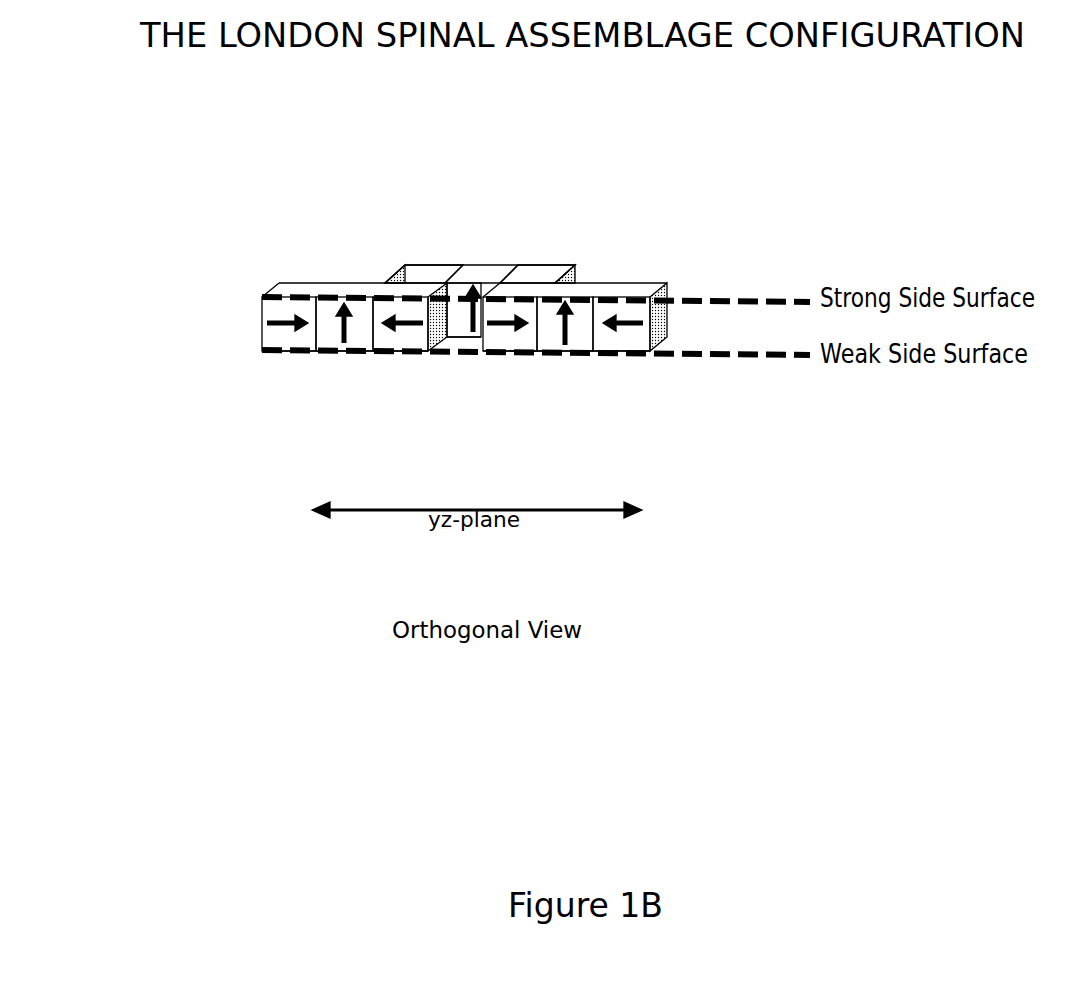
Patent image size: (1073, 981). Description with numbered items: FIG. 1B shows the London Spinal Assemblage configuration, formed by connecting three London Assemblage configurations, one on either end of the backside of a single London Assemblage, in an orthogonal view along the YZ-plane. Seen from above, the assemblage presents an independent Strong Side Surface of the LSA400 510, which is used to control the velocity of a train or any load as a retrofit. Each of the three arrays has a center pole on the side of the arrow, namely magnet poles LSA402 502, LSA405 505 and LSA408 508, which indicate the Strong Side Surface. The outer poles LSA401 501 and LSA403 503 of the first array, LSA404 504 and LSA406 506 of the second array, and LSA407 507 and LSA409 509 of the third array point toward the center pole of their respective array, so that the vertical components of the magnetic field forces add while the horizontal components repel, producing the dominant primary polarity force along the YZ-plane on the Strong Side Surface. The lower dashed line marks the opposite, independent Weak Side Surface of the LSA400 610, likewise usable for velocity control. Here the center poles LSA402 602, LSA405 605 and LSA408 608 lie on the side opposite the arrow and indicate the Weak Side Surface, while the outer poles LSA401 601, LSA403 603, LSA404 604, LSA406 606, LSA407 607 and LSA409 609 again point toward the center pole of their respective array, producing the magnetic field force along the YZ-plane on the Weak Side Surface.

The pole LSA401 501 is at (297, 295).
The magnet pole LSA402 502 is at (349, 295).
The pole LSA403 503 is at (397, 295).
The pole LSA404 504 is at (436, 262).
The magnet pole LSA405 505 is at (487, 262).
The pole LSA406 506 is at (540, 262).
The pole LSA407 507 is at (530, 289).
The magnet pole LSA408 508 is at (583, 289).
The pole LSA409 509 is at (638, 289).
The LSA400 Strong Side Surface 510 is at (536, 281).
The pole LSA401 601 is at (627, 355).
The magnet pole LSA402 602 is at (568, 355).
The pole LSA403 603 is at (522, 355).
The pole LSA404 604 is at (512, 355).
The magnet pole LSA405 605 is at (465, 340).
The pole LSA406 606 is at (409, 355).
The pole LSA407 607 is at (391, 355).
The magnet pole LSA408 608 is at (345, 355).
The pole LSA409 609 is at (289, 355).
The LSA400 Weak Side Surface 610 is at (536, 372).